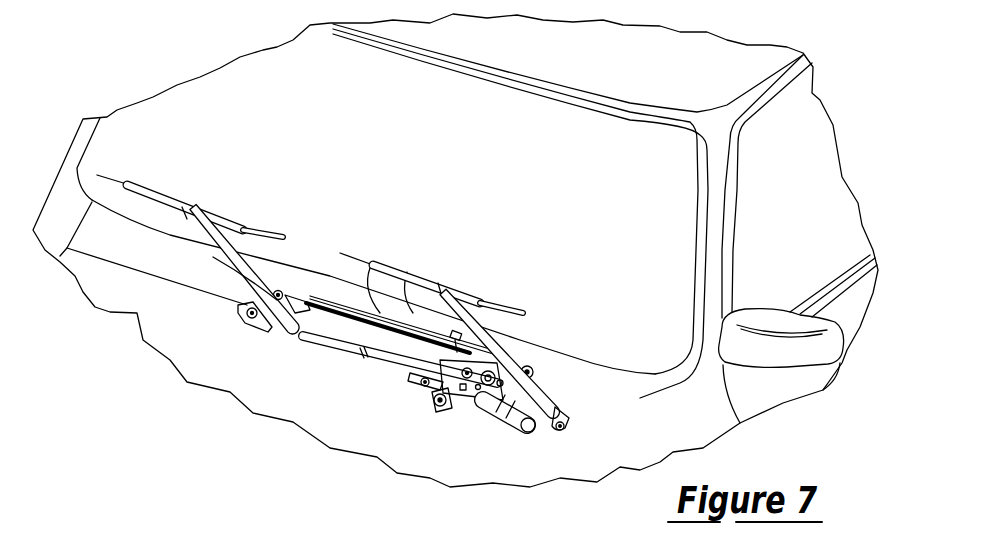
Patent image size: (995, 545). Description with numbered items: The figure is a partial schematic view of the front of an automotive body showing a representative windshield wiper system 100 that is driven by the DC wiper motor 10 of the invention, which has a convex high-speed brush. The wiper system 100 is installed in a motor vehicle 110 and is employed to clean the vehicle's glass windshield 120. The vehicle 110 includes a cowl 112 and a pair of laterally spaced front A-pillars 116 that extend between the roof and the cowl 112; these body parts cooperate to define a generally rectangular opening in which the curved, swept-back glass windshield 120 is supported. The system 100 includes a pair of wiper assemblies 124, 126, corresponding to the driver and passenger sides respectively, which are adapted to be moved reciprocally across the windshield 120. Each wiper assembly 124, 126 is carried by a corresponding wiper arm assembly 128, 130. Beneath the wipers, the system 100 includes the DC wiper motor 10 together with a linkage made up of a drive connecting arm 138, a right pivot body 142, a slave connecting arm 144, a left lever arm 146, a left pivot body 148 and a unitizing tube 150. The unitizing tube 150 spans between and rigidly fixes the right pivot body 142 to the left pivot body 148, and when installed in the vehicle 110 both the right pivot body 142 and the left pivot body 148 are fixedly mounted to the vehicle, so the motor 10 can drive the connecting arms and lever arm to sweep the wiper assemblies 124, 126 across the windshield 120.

The DC wiper motor 10 is at (485, 436).
The windshield wiper system 100 is at (199, 339).
The motor vehicle 110 is at (141, 85).
The cowl 112 is at (160, 247).
The A-pillars 116 is at (107, 118).
The glass windshield 120 is at (362, 202).
The wiper assembly 124 is at (475, 283).
The wiper assembly 126 is at (227, 200).
The wiper arm assembly 128 is at (513, 341).
The wiper arm assembly 130 is at (231, 277).
The drive connecting arm 138 is at (410, 318).
The right pivot body 142 is at (275, 340).
The slave connecting arm 144 is at (383, 312).
The left lever arm 146 is at (537, 380).
The left pivot body 148 is at (465, 405).
The unitizing tube 150 is at (385, 370).